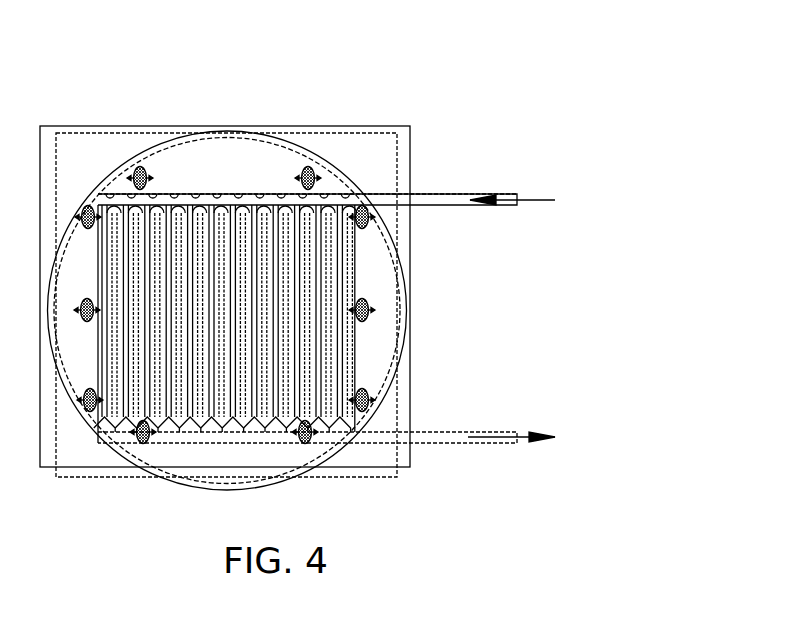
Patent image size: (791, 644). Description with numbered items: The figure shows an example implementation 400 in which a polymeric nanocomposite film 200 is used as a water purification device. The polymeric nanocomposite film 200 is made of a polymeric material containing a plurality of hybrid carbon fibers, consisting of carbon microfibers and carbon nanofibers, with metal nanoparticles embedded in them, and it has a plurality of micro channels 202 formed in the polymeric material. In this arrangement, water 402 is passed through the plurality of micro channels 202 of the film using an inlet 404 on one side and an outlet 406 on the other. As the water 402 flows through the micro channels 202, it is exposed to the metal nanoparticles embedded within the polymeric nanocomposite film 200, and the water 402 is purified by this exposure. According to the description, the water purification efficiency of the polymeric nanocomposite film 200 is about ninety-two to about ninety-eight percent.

The example implementation 400 is at (608, 86).
The polymeric nanocomposite film 200 is at (117, 159).
The micro channels 202 is at (342, 275).
The water 402 is at (548, 200).
The inlet 404 is at (517, 207).
The outlet 406 is at (517, 433).